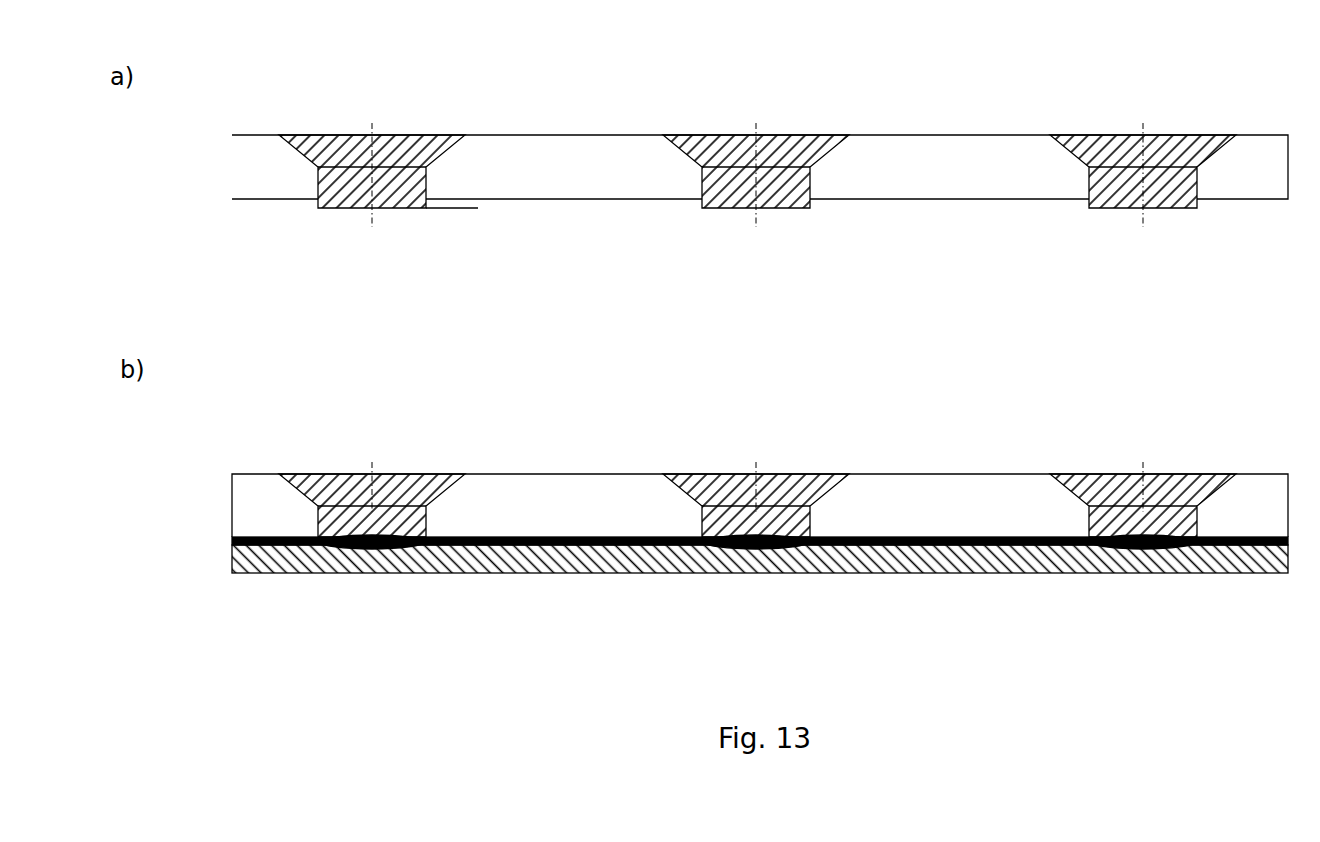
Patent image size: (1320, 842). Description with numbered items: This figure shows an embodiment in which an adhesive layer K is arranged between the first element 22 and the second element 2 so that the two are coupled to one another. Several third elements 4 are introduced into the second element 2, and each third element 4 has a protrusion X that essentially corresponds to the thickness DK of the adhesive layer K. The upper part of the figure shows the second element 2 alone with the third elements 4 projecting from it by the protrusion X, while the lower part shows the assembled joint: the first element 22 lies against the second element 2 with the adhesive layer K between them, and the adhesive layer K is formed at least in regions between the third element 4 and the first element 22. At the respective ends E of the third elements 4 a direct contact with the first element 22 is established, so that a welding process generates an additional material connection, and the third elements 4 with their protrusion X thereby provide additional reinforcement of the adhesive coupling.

The second element 2 is at (572, 160).
The third element 4 is at (735, 143).
The first element 22 is at (933, 565).
The adhesive layer K is at (880, 536).
The ends of the third elements E is at (305, 570).
The thickness of the adhesive layer DK is at (587, 503).
The protrusion X is at (471, 153).